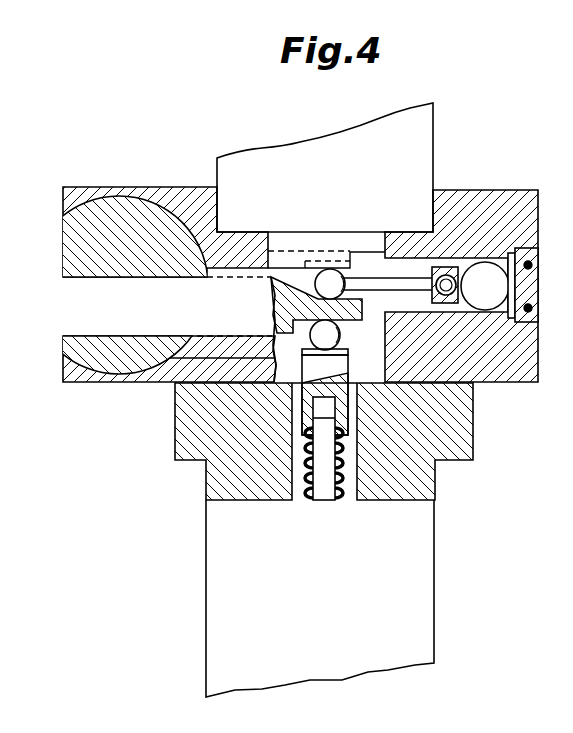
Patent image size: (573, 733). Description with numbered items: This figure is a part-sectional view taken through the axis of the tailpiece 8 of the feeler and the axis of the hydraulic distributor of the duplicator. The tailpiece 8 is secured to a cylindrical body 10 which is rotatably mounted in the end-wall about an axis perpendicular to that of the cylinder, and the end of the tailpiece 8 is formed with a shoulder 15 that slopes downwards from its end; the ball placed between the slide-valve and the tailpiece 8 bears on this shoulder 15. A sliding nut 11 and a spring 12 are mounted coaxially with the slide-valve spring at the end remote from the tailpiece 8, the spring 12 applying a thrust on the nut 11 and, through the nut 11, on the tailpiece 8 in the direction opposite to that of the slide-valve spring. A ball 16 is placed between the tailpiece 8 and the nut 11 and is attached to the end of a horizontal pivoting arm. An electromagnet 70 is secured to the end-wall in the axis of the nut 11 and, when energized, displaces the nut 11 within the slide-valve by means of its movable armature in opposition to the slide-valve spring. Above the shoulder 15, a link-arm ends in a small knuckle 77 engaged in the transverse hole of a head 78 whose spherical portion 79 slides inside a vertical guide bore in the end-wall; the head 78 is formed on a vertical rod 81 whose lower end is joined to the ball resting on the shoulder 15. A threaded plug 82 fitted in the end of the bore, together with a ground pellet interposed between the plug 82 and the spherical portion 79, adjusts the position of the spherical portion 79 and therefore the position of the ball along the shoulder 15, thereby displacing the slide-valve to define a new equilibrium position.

The tailpiece 8 is at (76, 316).
The cylindrical body 10 is at (103, 206).
The sliding nut 11 is at (352, 393).
The spring 12 is at (356, 500).
The shoulder 15 is at (302, 270).
The ball 16 is at (310, 344).
The electromagnet 70 is at (417, 634).
The knuckle 77 is at (447, 300).
The head 78 is at (447, 275).
The spherical portion 79 is at (484, 262).
The vertical rod 81 is at (387, 275).
The threaded plug 82 is at (530, 296).